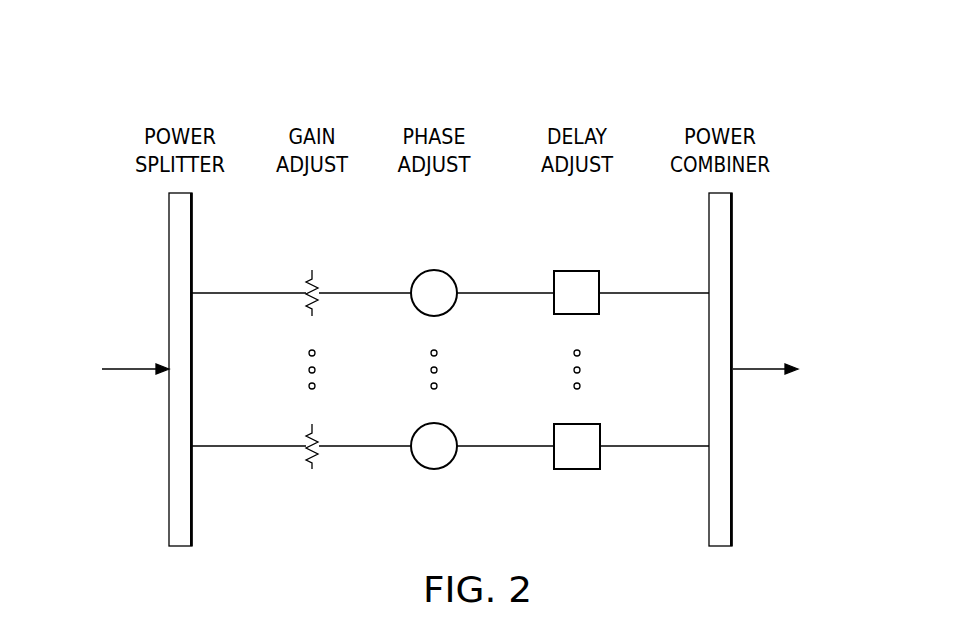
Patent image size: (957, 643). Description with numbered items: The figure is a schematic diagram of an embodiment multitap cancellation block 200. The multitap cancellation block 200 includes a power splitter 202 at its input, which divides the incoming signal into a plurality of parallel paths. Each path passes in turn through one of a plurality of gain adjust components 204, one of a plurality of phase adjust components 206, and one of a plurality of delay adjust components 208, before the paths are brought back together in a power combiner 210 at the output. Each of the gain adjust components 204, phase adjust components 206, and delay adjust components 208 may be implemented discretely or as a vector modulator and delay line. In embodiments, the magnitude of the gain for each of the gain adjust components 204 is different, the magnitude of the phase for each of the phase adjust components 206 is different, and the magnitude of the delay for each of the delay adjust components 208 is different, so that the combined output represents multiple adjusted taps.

The multitap cancellation block 200 is at (107, 132).
The power splitter 202 is at (168, 337).
The gain adjust components 204 is at (306, 291).
The phase adjust components 206 is at (435, 269).
The delay adjust components 208 is at (577, 270).
The power combiner 210 is at (733, 338).